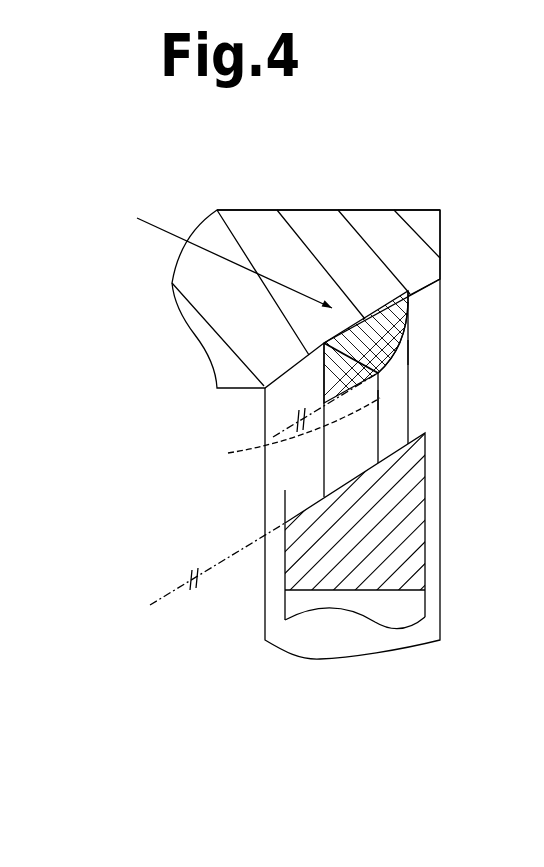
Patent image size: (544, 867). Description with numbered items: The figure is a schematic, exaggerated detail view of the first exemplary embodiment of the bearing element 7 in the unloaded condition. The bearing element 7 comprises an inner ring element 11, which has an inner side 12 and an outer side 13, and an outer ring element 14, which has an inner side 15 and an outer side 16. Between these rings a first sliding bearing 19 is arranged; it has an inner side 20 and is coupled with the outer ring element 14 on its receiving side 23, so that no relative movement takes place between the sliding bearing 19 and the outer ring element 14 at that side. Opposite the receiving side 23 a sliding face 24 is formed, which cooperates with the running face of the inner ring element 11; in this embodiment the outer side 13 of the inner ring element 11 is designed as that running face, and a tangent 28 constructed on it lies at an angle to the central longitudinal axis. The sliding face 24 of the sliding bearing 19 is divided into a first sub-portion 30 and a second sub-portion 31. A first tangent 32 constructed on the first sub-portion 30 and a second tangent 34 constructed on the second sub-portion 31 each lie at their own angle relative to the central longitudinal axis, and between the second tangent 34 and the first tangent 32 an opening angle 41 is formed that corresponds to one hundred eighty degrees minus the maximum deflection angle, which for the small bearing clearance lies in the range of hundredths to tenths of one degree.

The bearing element 7 is at (180, 190).
The inner ring element 11 is at (373, 517).
The inner side 12 is at (313, 600).
The outer side 13 is at (283, 500).
The outer ring element 14 is at (318, 232).
The inner side 15 is at (428, 290).
The outer side 16 is at (275, 210).
The first sliding bearing 19 is at (324, 343).
The inner side 20 is at (372, 412).
The receiving side 23 is at (222, 250).
The sliding face 24 is at (400, 372).
The tangent 28 is at (190, 578).
The first sub-portion 30 is at (291, 432).
The second sub-portion 31 is at (404, 353).
The first tangent 32 is at (298, 415).
The second tangent 34 is at (380, 398).
The opening angle 41 is at (397, 334).